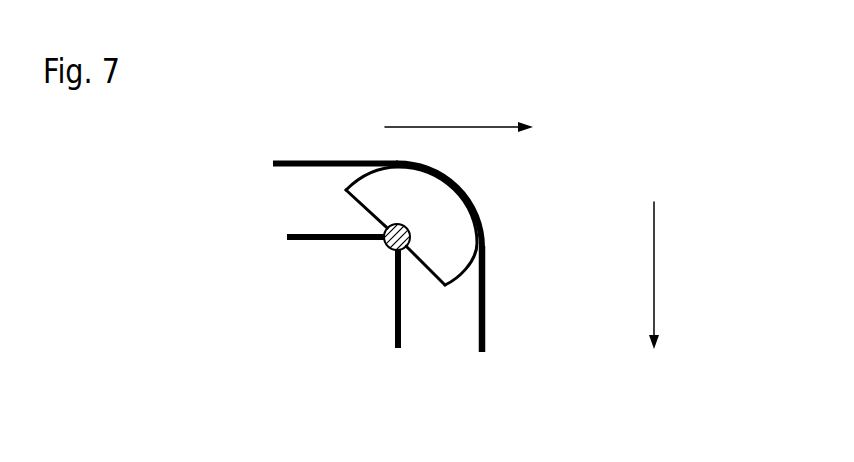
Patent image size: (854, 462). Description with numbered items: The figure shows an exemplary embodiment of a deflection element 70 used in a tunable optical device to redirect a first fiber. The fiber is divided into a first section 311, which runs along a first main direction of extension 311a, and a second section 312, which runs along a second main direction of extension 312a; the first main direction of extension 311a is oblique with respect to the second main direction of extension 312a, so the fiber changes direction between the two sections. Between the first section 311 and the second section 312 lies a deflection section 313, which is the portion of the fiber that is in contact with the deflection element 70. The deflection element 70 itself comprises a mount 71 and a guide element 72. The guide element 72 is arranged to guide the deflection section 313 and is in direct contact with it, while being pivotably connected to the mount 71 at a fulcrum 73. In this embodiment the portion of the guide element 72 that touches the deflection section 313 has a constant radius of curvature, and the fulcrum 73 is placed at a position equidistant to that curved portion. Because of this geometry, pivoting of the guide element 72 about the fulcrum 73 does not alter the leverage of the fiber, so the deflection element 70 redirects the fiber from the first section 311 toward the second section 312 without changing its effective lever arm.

The first section 311 is at (337, 161).
The first main direction of extension 311a is at (452, 127).
The second section 312 is at (485, 298).
The second main direction of extension 312a is at (654, 222).
The deflection section 313 is at (473, 195).
The deflection element 70 is at (213, 305).
The mount 71 is at (323, 238).
The guide element 72 is at (373, 195).
The fulcrum 73 is at (386, 250).